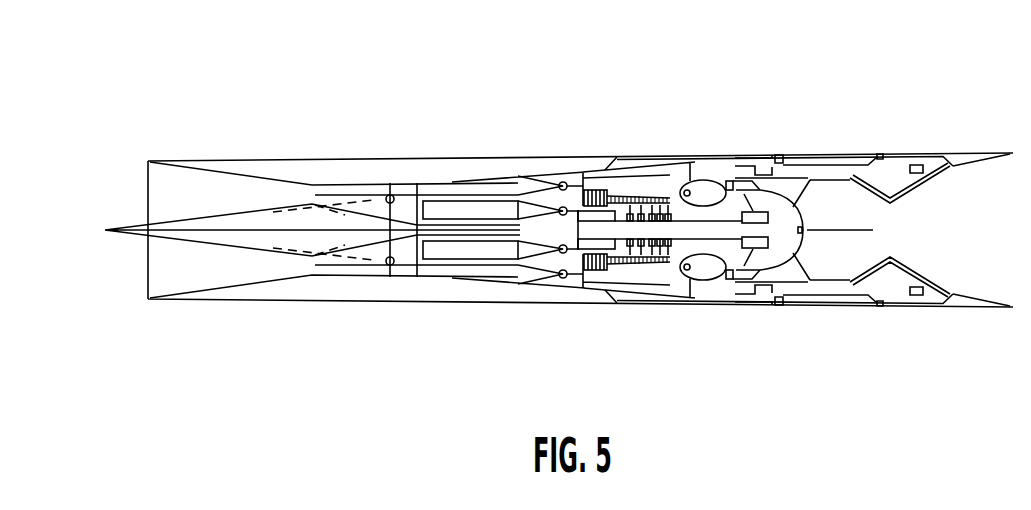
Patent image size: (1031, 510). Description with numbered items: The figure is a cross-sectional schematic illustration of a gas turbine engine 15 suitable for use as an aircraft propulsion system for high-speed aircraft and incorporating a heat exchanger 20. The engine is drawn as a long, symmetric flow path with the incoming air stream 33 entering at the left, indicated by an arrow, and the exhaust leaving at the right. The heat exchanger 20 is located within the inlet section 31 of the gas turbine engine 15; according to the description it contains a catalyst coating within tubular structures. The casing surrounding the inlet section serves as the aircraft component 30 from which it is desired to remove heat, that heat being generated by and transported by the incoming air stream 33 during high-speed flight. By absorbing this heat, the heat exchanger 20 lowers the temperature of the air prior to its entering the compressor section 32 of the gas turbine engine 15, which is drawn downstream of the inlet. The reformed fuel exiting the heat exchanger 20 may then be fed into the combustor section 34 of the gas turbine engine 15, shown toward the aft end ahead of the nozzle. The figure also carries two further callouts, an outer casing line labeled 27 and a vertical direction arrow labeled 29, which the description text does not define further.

The gas turbine engine 15 is at (832, 78).
The heat exchanger 20 is at (493, 253).
The outer casing / nacelle 27 is at (528, 142).
The radial direction 29 is at (474, 160).
The aircraft component 30 is at (453, 190).
The inlet section 31 is at (496, 303).
The compressor section 32 is at (632, 310).
The incoming air stream 33 is at (127, 188).
The combustor section 34 is at (720, 322).